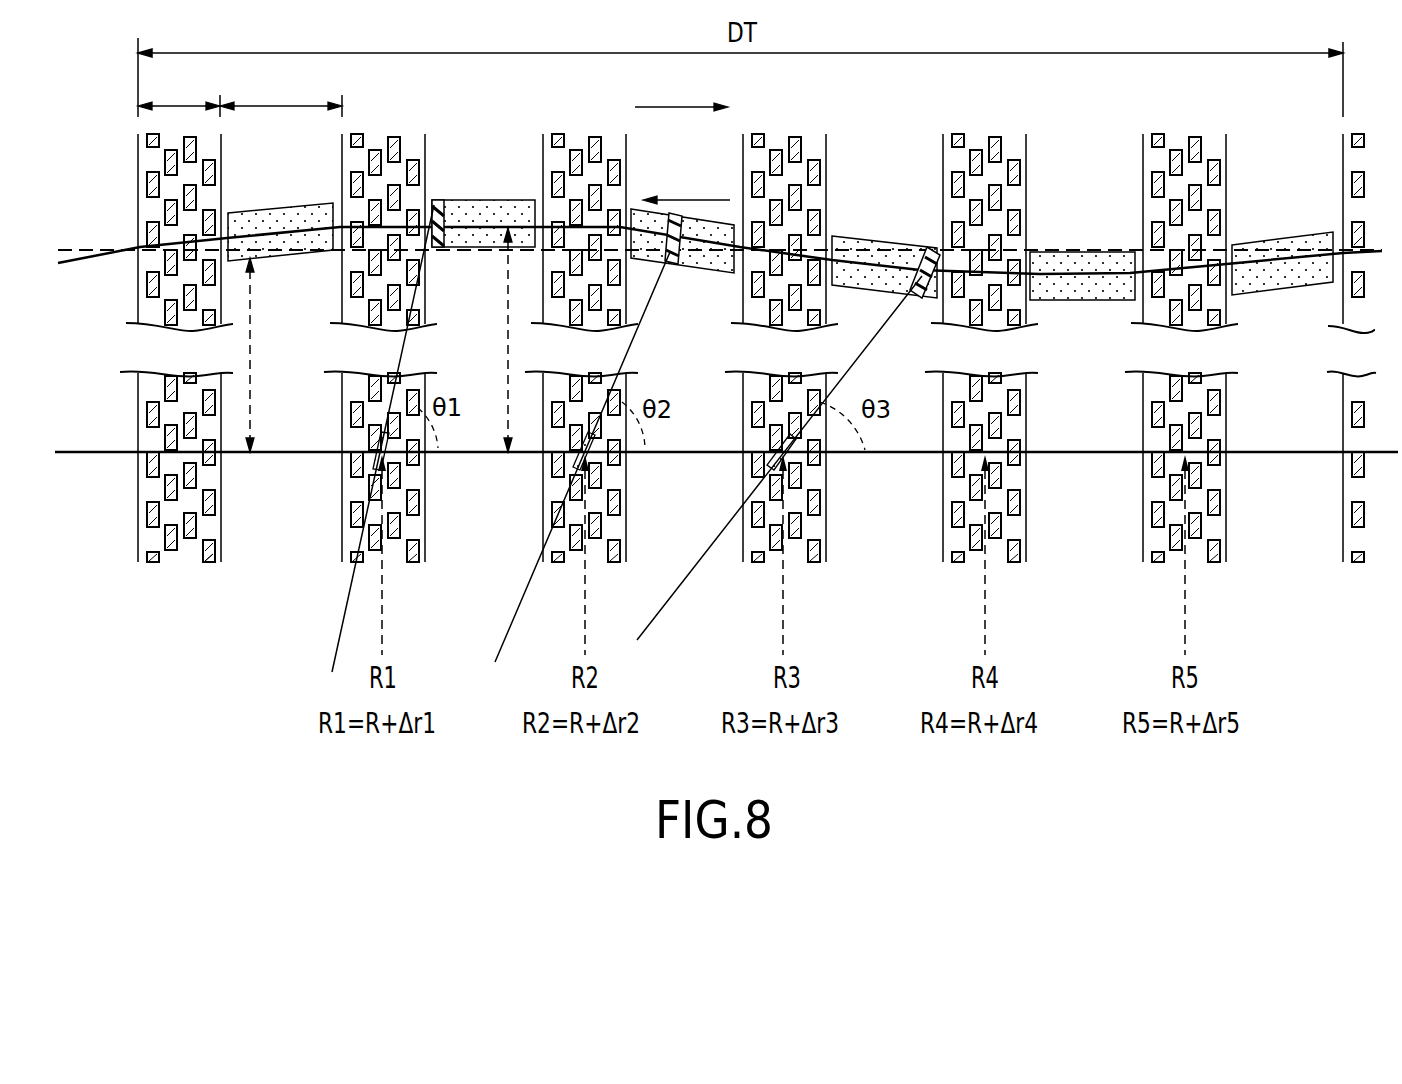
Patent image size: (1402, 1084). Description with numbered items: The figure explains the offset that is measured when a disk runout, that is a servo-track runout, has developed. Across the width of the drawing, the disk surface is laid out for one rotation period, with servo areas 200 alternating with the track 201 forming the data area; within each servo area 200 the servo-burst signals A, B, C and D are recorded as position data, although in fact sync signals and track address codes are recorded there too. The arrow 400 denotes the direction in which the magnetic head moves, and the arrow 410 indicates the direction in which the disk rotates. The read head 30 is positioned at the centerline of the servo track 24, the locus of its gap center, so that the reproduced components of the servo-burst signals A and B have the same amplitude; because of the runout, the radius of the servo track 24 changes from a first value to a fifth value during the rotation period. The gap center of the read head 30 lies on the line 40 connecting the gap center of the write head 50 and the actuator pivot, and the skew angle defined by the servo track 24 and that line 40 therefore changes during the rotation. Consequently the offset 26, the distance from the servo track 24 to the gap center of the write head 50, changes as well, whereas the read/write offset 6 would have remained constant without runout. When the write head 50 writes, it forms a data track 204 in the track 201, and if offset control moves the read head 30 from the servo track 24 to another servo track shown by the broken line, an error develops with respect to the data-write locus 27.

The read/write offset 6 is at (256, 321).
The servo track 24 is at (60, 456).
The offset 26 is at (507, 322).
The data-write locus 27 is at (60, 265).
The read head 30 is at (372, 448).
The line 40 is at (333, 648).
The write head 50 is at (436, 200).
The servo areas 200 is at (179, 90).
The track 201 is at (281, 90).
The data track 204 is at (284, 206).
The direction of magnetic head movement 400 is at (686, 188).
The direction of disk rotation 410 is at (681, 94).
The servo-burst signal A is at (147, 512).
The servo-burst signal B is at (170, 549).
The servo-burst signal C is at (192, 545).
The servo-burst signal D is at (208, 562).